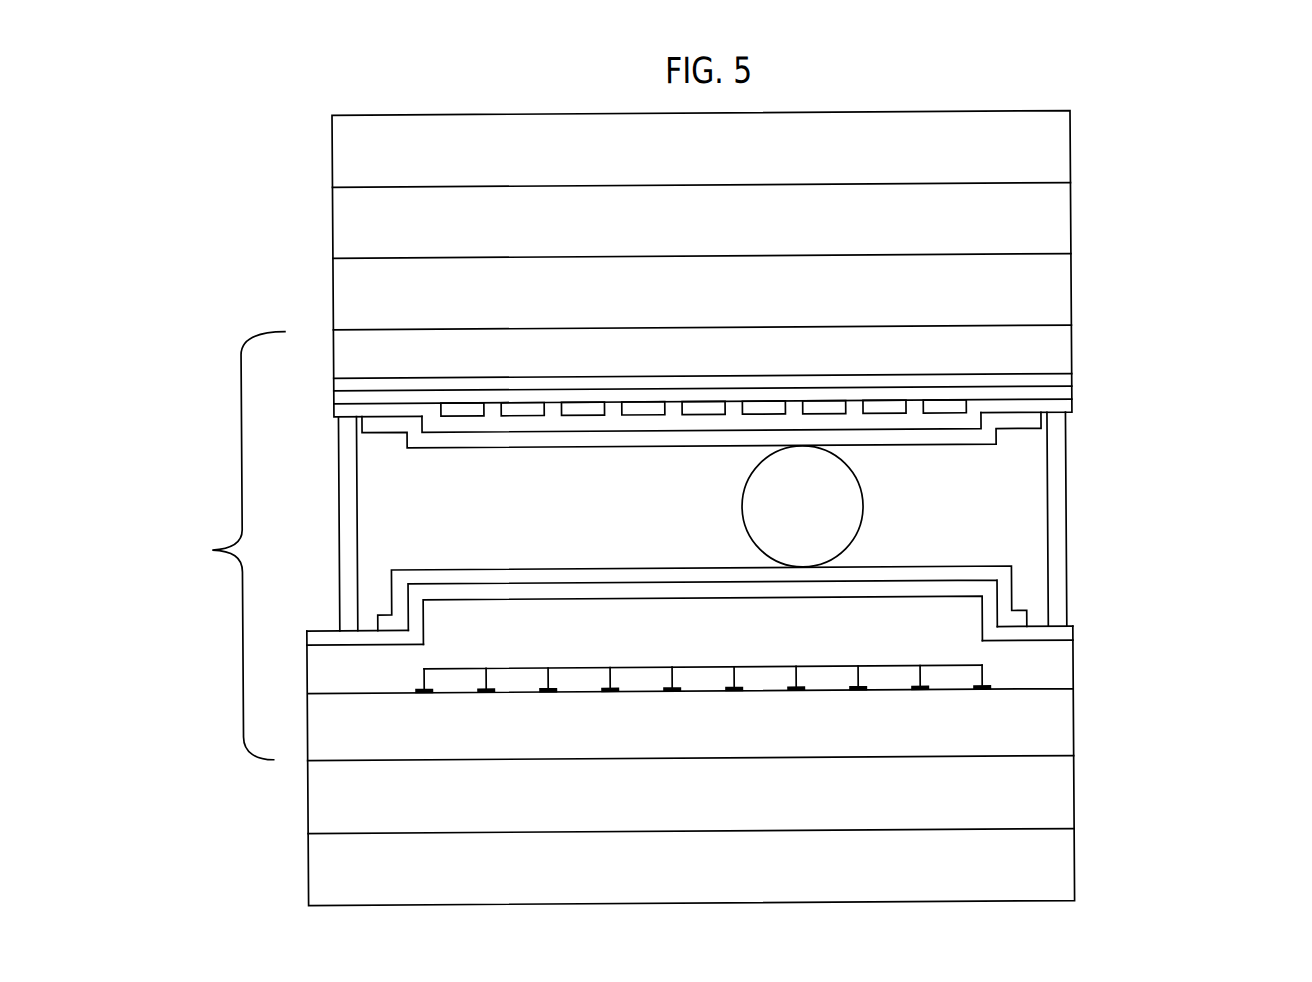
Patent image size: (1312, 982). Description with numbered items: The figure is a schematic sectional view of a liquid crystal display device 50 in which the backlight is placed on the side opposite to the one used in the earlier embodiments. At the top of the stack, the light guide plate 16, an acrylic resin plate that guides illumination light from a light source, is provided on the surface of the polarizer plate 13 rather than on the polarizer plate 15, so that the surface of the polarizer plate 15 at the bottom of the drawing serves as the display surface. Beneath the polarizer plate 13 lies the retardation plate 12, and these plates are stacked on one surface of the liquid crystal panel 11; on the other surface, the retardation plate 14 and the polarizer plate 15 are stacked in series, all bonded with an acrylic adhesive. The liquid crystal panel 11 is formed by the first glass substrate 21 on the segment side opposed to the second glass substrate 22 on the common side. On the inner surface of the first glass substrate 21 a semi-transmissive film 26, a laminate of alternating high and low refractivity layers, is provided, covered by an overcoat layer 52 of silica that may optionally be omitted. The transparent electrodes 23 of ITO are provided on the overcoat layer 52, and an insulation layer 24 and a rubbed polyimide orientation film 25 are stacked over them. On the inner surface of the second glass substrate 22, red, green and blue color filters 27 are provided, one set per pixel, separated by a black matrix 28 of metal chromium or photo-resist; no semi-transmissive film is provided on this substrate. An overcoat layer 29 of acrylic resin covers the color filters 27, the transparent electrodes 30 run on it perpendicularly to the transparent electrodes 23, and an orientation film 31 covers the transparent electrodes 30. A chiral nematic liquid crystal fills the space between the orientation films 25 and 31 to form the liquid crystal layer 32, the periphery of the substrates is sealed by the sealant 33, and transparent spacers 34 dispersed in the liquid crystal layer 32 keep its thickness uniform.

The liquid crystal display device 50 is at (1108, 91).
The light guide plate 16 is at (1054, 154).
The polarizer plate 13 is at (1047, 224).
The retardation plate 12 is at (1047, 287).
The first glass substrate 21 is at (1072, 367).
The semi-transmissive film 26 is at (1064, 379).
The overcoat layer 52 is at (1064, 397).
The transparent electrodes 23 is at (944, 407).
The insulation layer 24 is at (1064, 409).
The orientation film 25 is at (1020, 422).
The sealant 33 is at (1057, 558).
The transparent spacers 34 is at (844, 506).
The orientation film 31 is at (1002, 579).
The liquid crystal layer 32 is at (1012, 543).
The overcoat layer 29 is at (1062, 674).
The transparent electrodes 30 is at (1062, 634).
The color filters 27 is at (843, 668).
The black matrix 28 is at (921, 700).
The second glass substrate 22 is at (1057, 732).
The retardation plate 14 is at (1057, 792).
The polarizer plate 15 is at (1057, 865).
The liquid crystal panel 11 is at (220, 546).